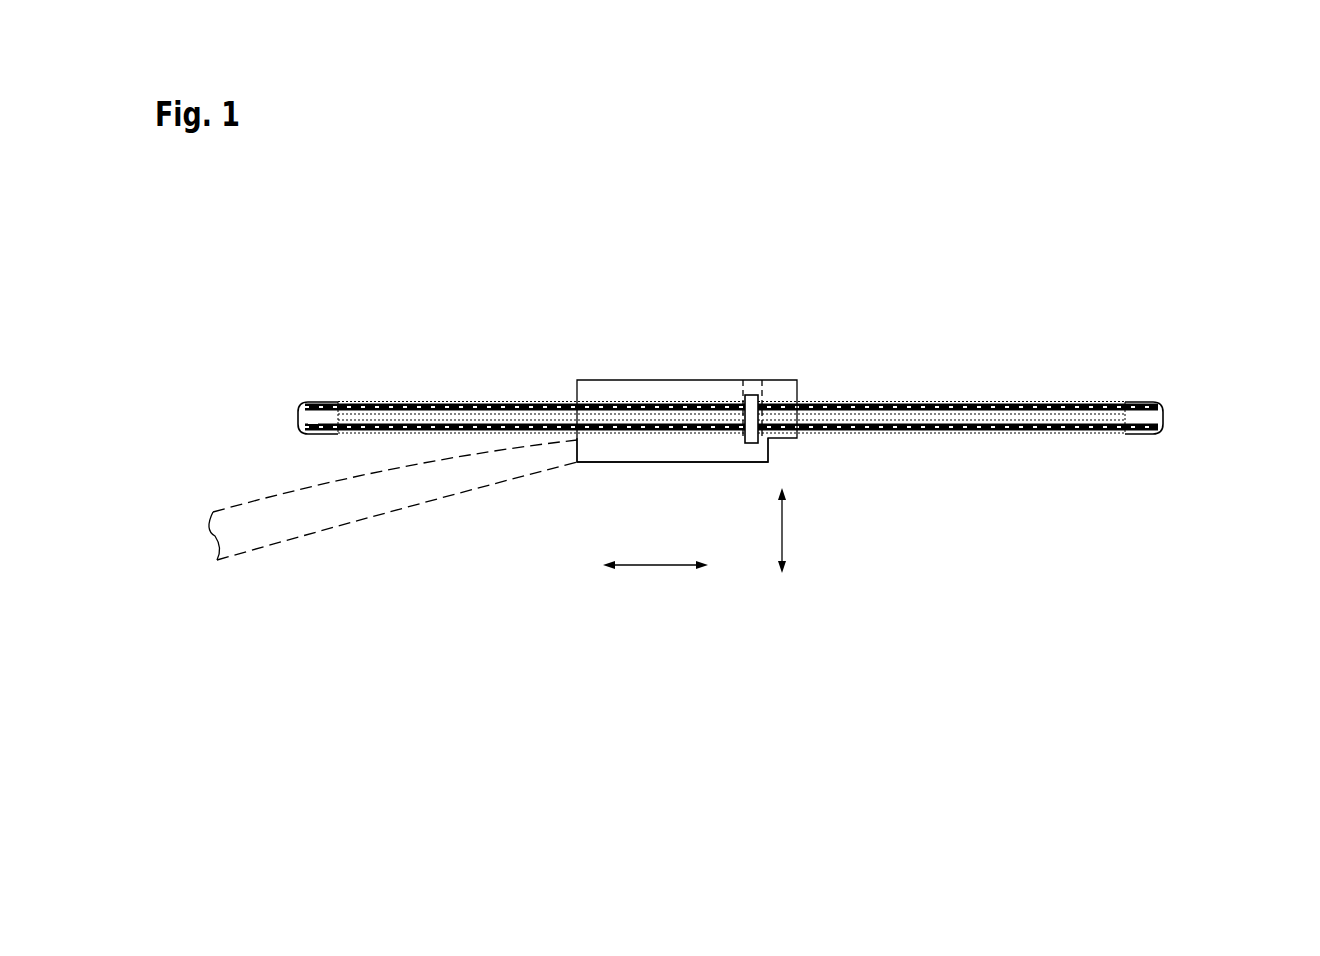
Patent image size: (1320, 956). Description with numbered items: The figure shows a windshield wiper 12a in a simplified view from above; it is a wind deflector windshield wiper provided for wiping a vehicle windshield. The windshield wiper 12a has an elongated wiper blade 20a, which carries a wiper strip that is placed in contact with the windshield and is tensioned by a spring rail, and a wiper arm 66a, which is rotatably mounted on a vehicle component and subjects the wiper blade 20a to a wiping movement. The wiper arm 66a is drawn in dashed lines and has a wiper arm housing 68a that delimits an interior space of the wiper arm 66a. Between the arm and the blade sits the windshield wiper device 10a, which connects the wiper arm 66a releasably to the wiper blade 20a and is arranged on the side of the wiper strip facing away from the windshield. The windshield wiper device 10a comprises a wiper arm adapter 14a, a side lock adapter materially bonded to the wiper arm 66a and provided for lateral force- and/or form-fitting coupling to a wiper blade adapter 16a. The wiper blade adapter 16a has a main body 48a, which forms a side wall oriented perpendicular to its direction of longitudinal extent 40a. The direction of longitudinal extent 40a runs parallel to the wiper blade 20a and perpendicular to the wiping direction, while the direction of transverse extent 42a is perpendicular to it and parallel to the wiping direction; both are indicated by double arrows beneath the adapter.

The windshield wiper device 10a is at (742, 423).
The windshield wiper 12a is at (772, 406).
The wiper arm adapter 14a is at (731, 450).
The wiper blade adapter 16a is at (643, 388).
The wiper blade 20a is at (1095, 434).
The direction of longitudinal extent 40a is at (658, 567).
The direction of transverse extent 42a is at (785, 530).
The main body 48a is at (590, 386).
The wiper arm 66a is at (393, 522).
The wiper arm housing 68a is at (327, 527).